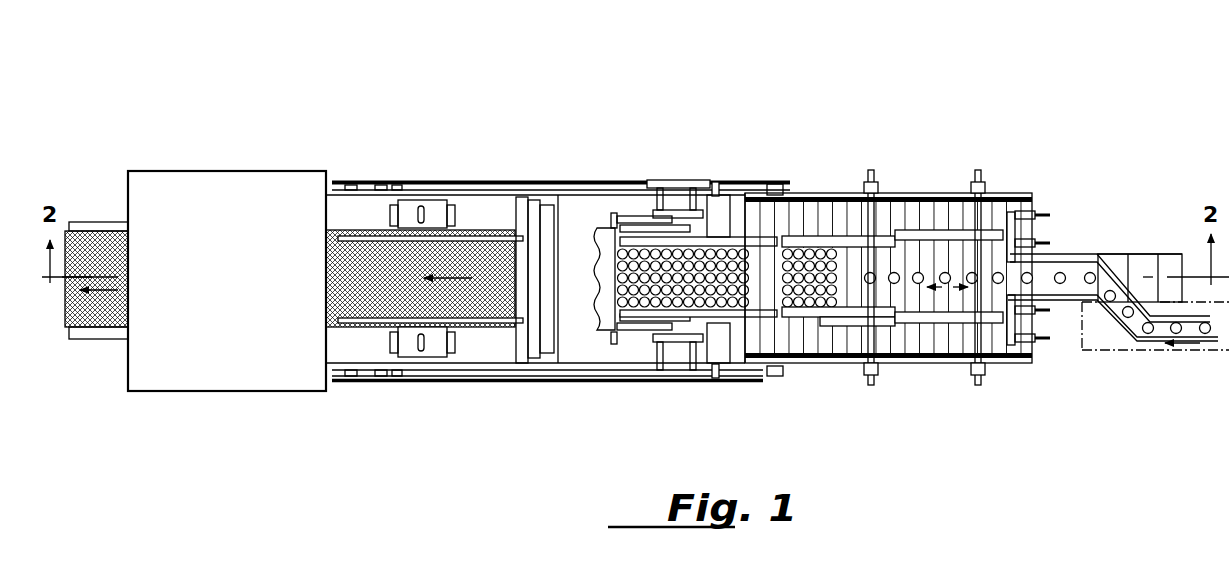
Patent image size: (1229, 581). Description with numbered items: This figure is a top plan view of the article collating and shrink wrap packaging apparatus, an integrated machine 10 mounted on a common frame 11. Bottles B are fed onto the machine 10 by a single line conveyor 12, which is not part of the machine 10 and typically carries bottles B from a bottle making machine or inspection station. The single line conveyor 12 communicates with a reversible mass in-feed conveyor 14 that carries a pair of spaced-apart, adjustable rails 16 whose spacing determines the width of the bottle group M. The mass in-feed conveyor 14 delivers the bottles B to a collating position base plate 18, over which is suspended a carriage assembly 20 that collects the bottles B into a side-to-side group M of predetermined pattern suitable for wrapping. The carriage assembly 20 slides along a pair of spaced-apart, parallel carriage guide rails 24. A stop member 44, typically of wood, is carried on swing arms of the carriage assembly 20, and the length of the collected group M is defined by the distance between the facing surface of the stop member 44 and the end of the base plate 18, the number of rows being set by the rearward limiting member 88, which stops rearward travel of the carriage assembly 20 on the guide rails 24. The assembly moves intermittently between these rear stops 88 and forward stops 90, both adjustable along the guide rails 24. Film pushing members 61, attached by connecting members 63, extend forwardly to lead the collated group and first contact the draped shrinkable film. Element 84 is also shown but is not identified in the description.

The integrated machine 10 is at (907, 96).
The common frame 11 is at (918, 192).
The single line conveyor 12 is at (1165, 337).
The reversible mass in-feed conveyor 14 is at (908, 290).
The adjustable rails 16 is at (855, 316).
The collating position base plate 18 is at (722, 215).
The carriage assembly 20 is at (658, 316).
The carriage guide rails 24 is at (490, 188).
The stop member 44 is at (600, 270).
The film pushing members 61 is at (612, 213).
The connecting members 63 is at (633, 220).
The hydraulic cylinder 84 is at (373, 297).
The rearward limiting member 88 is at (715, 182).
The forward stops 90 is at (394, 186).
The bottles B is at (1033, 277).
The side-to-side group M is at (620, 292).